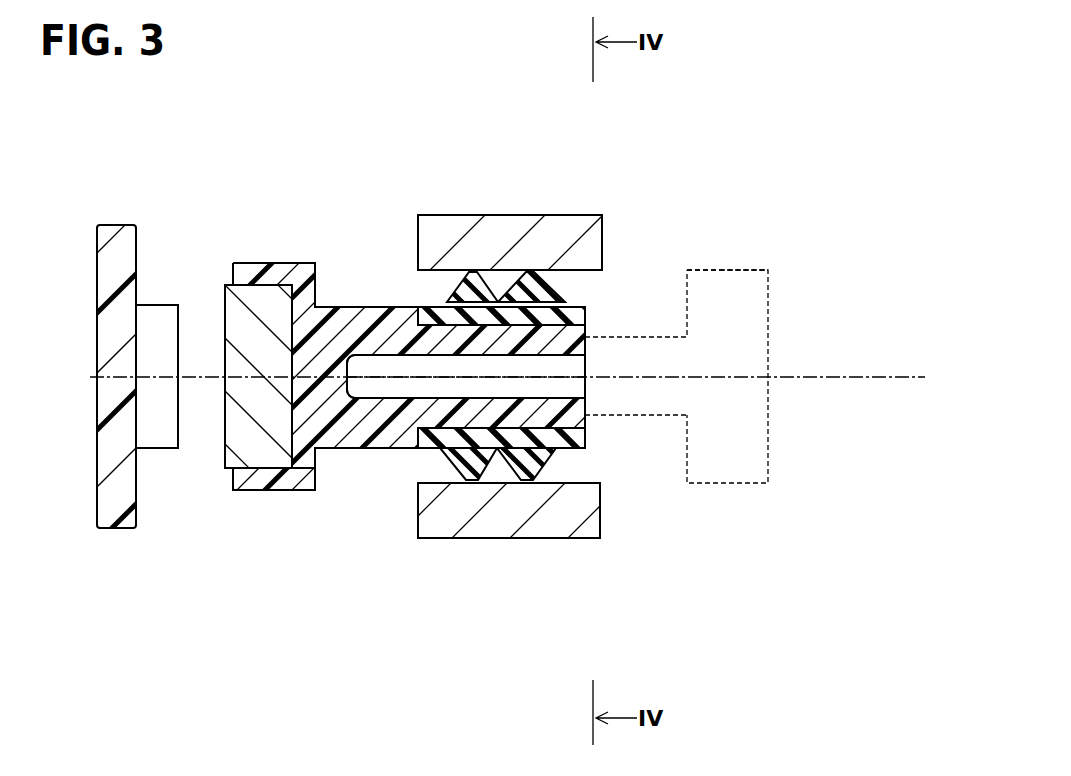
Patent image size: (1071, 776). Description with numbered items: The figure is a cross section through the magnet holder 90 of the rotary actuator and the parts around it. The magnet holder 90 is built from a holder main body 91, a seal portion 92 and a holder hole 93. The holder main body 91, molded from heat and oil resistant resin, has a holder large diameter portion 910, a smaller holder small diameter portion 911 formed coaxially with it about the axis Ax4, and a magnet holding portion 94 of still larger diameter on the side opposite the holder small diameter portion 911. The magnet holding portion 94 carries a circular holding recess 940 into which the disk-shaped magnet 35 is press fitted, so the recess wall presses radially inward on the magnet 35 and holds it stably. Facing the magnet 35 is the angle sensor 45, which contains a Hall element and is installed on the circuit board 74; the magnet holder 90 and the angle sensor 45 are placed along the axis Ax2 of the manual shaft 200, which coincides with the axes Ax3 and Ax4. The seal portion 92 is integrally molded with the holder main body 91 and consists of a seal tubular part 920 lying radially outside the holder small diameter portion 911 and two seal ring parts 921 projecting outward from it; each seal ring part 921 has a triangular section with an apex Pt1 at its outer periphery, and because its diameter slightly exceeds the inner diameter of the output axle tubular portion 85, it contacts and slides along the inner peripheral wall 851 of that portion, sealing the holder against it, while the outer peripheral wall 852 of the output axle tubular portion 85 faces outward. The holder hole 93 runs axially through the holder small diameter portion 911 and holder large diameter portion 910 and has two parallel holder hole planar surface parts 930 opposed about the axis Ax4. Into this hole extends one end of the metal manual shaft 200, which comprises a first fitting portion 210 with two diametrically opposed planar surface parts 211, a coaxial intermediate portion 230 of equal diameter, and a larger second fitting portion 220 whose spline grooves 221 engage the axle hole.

The circuit board 74 is at (113, 271).
The holding recess 940 is at (237, 317).
The magnet 35 is at (235, 342).
The angle sensor 45 is at (150, 400).
The magnet holding portion 94 is at (262, 490).
The magnet holder 90 is at (407, 464).
The holder large diameter portion 910 is at (340, 445).
The holder main body 91 is at (387, 445).
The holder small diameter portion 911 is at (493, 430).
The holder hole planar surface parts 930 is at (588, 363).
The holder hole 93 is at (588, 384).
The seal portion 92 is at (502, 270).
The seal tubular part 920 is at (563, 307).
The seal ring parts 921 is at (450, 298).
The apex Pt1 is at (470, 275).
The output axle tubular portion 85 is at (512, 439).
The inner peripheral wall 851 is at (605, 478).
The outer peripheral wall 852 is at (570, 540).
The first fitting portion 210 is at (388, 360).
The planar surface parts 211 is at (411, 307).
The intermediate portion 230 is at (641, 337).
The manual shaft 200 is at (685, 306).
The second fitting portion 220 is at (700, 270).
The spline grooves 221 is at (732, 270).
The axis Ax2 is at (507, 457).
The axis Ax3 is at (507, 457).
The axis Ax4 is at (856, 377).